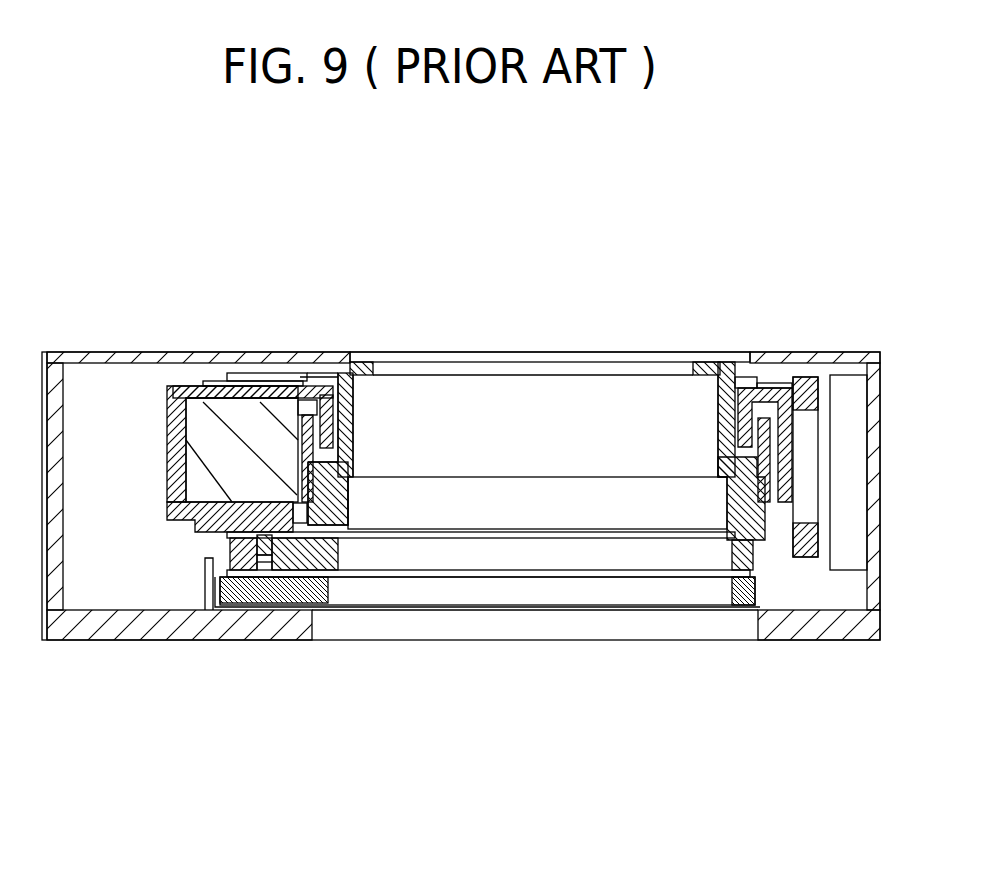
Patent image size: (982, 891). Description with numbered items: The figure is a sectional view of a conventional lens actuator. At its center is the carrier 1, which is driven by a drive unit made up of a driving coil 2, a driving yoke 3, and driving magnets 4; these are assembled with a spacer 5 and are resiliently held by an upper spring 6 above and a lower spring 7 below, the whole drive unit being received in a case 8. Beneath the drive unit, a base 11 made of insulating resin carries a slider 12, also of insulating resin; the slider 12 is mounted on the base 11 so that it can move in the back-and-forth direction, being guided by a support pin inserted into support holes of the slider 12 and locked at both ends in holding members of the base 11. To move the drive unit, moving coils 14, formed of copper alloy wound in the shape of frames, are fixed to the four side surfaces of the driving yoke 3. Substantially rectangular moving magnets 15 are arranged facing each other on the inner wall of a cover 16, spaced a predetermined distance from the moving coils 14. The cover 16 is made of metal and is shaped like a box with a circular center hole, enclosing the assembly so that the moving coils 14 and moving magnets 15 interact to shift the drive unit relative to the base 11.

The carrier 1 is at (573, 400).
The driving coil 2 is at (306, 400).
The driving yoke 3 is at (177, 392).
The driving magnets 4 is at (217, 410).
The spacer 5 is at (208, 532).
The upper spring 6 is at (268, 385).
The lower spring 7 is at (303, 533).
The case 8 is at (248, 553).
The base 11 is at (637, 625).
The slider 12 is at (523, 592).
The moving coils 14 is at (806, 543).
The moving magnets 15 is at (842, 540).
The cover 16 is at (853, 358).